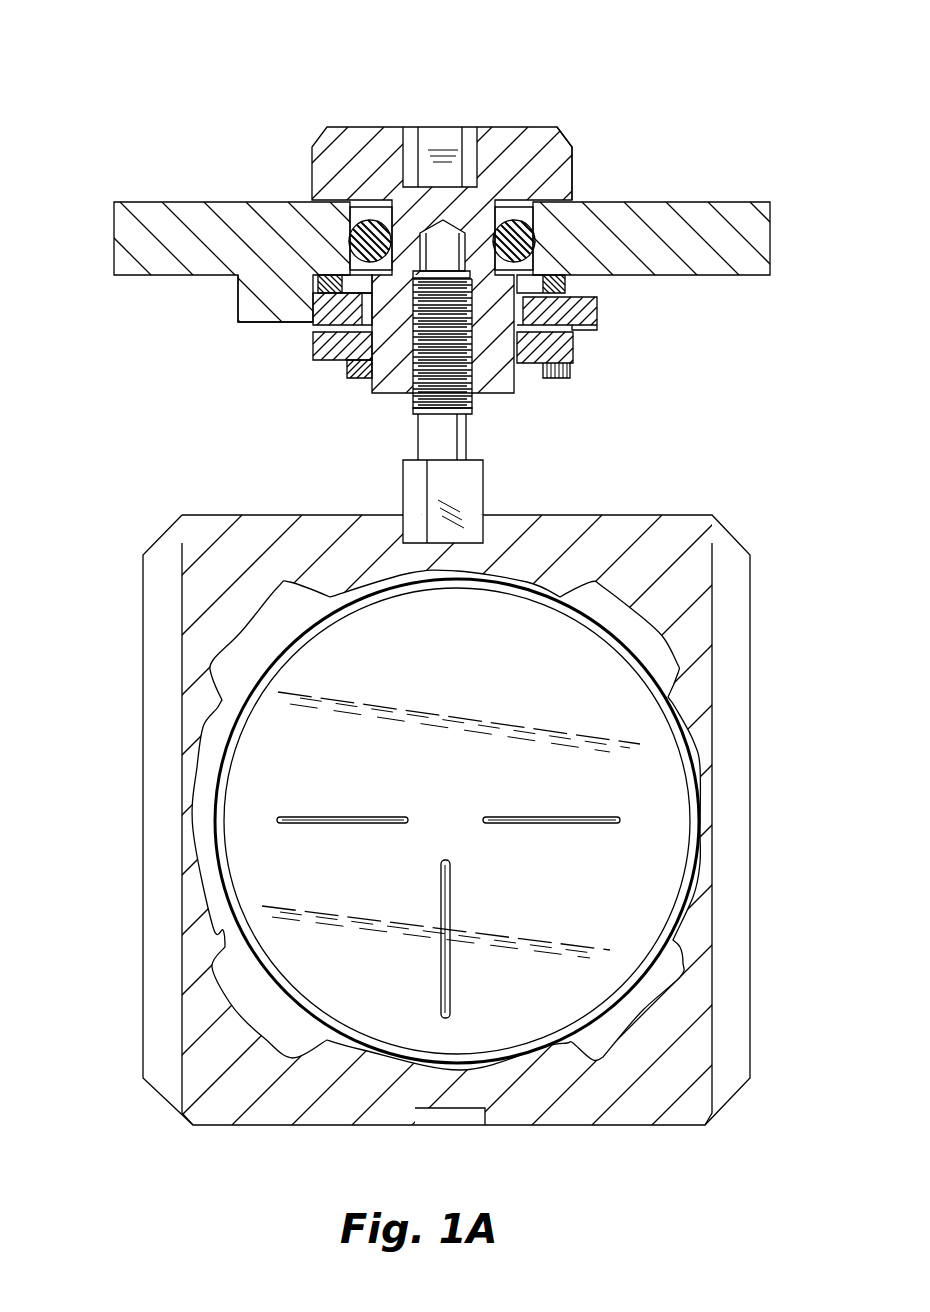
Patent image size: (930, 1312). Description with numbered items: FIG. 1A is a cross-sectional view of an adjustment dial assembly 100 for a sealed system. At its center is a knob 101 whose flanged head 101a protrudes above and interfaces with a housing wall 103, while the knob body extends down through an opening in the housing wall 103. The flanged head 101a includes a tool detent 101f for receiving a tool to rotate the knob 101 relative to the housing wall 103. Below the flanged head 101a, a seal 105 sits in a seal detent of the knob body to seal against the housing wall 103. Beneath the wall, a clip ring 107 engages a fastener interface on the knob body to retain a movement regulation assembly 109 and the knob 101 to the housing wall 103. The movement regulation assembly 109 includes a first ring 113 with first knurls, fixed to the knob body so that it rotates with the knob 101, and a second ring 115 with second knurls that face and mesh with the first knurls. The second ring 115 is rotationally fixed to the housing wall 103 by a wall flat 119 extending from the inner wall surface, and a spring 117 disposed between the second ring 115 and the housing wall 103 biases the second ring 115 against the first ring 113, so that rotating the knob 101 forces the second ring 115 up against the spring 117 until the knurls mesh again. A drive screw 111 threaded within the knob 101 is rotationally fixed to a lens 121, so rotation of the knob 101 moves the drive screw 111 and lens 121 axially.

The adjustment dial assembly 100 is at (190, 103).
The knob 101 is at (319, 133).
The flanged head 101a is at (510, 163).
The tool detent 101f is at (445, 153).
The housing wall 103 is at (722, 201).
The seal 105 is at (540, 240).
The clip ring 107 is at (560, 378).
The movement regulation assembly 109 is at (323, 372).
The drive screw 111 is at (405, 500).
The first ring 113 is at (322, 366).
The second ring 115 is at (595, 331).
The spring 117 is at (567, 282).
The wall flat 119 is at (241, 300).
The lens 121 is at (143, 642).